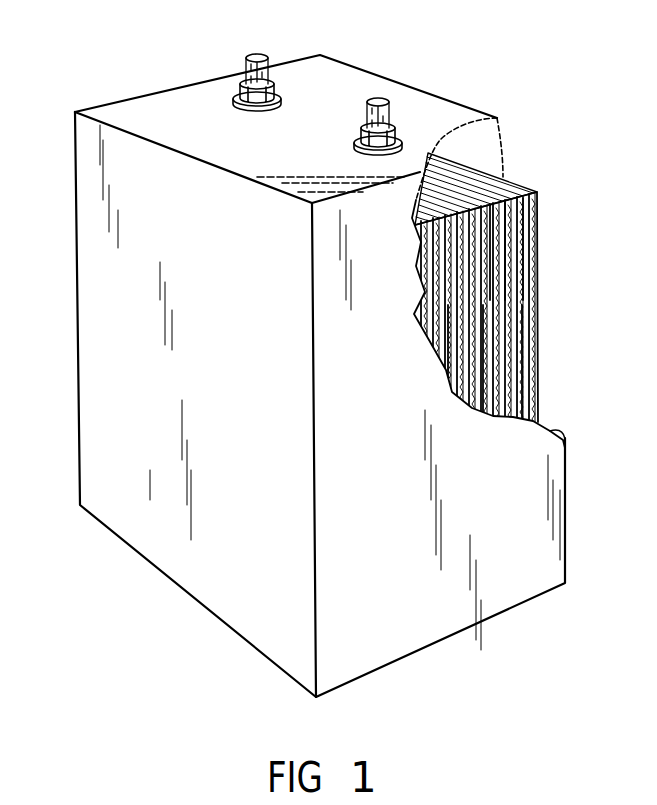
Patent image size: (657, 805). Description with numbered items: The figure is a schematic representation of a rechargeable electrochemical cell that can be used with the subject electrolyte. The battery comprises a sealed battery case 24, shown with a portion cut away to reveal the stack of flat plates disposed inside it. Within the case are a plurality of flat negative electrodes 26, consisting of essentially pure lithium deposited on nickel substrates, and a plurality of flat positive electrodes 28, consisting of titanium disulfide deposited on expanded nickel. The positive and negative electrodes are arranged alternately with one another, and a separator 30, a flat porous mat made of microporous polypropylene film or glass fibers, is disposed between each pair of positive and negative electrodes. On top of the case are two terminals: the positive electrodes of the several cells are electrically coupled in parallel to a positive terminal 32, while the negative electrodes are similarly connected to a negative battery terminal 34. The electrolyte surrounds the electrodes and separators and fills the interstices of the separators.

The sealed battery case 24 is at (85, 231).
The flat negative electrodes 26 is at (498, 286).
The flat positive electrodes 28 is at (483, 331).
The separators 30 is at (490, 243).
The positive terminal 32 is at (254, 56).
The negative battery terminal 34 is at (382, 99).